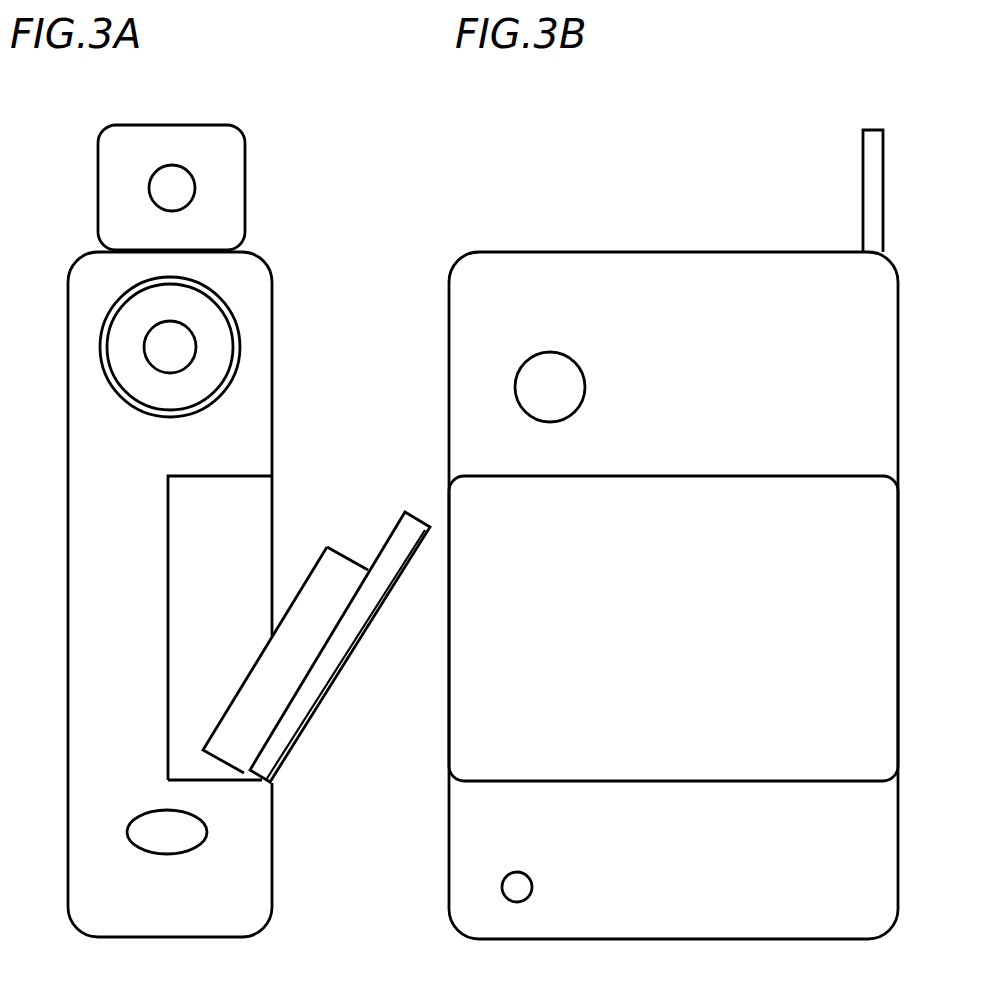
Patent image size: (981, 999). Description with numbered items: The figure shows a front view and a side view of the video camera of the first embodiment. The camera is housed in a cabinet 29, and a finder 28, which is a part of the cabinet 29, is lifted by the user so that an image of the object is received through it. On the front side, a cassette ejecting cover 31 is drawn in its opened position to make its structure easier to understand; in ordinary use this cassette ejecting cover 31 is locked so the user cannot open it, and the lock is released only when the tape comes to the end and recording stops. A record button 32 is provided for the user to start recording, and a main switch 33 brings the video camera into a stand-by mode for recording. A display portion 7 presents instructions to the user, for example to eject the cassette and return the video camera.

In FIG. 3A, the finder 28 is at (232, 146).
In FIG. 3B, the finder 28 is at (872, 180).
In FIG. 3A, the cabinet 29 is at (273, 350).
In FIG. 3B, the cabinet 29 is at (448, 390).
In FIG. 3A, the cassette ejecting cover 31 is at (397, 520).
In FIG. 3B, the record button 32 is at (550, 372).
In FIG. 3A, the main switch 33 is at (207, 832).
In FIG. 3B, the display portion 7 is at (499, 888).